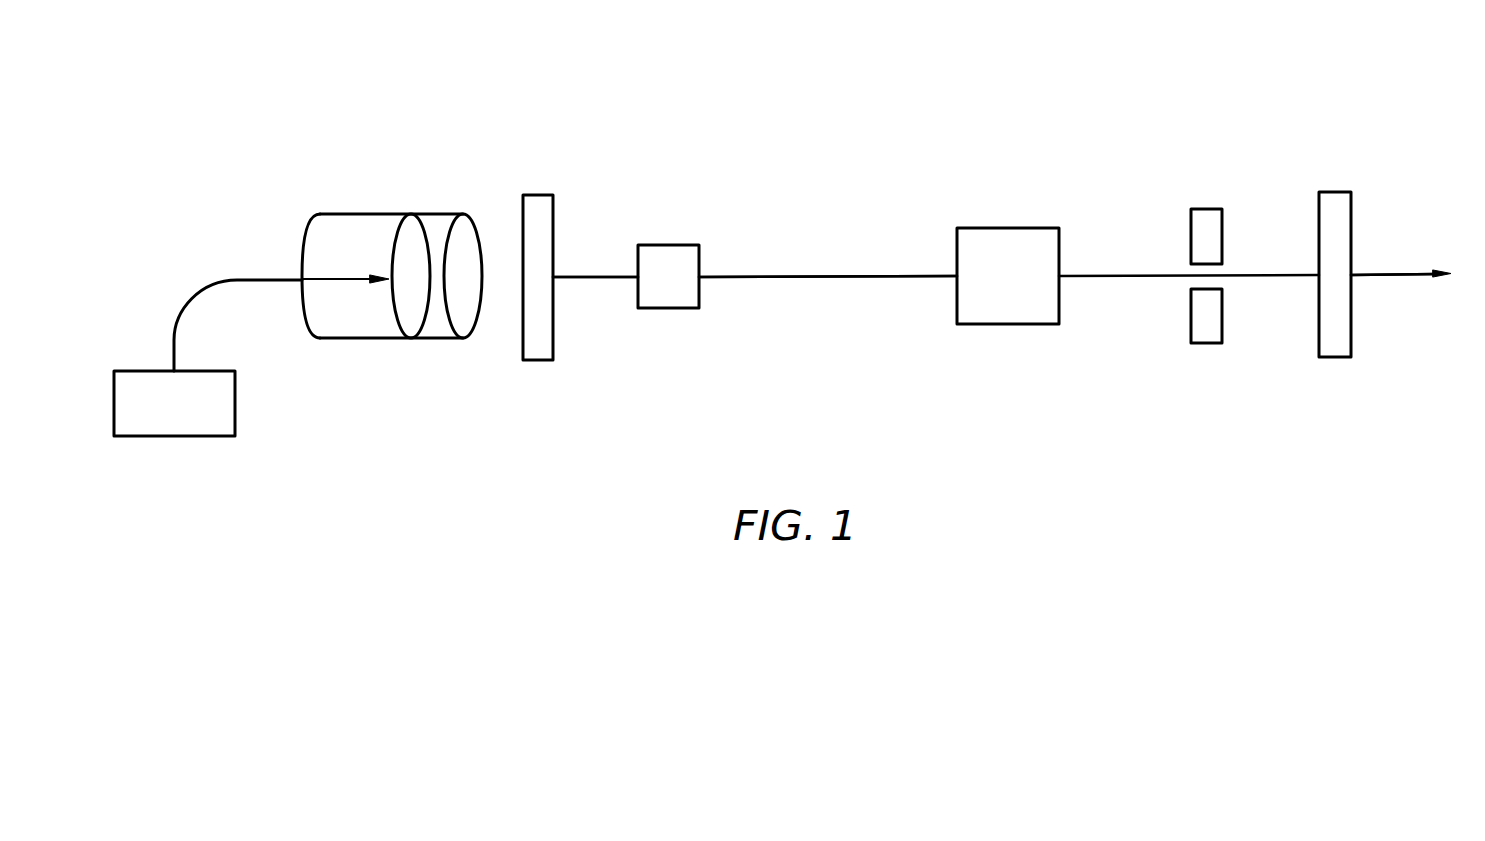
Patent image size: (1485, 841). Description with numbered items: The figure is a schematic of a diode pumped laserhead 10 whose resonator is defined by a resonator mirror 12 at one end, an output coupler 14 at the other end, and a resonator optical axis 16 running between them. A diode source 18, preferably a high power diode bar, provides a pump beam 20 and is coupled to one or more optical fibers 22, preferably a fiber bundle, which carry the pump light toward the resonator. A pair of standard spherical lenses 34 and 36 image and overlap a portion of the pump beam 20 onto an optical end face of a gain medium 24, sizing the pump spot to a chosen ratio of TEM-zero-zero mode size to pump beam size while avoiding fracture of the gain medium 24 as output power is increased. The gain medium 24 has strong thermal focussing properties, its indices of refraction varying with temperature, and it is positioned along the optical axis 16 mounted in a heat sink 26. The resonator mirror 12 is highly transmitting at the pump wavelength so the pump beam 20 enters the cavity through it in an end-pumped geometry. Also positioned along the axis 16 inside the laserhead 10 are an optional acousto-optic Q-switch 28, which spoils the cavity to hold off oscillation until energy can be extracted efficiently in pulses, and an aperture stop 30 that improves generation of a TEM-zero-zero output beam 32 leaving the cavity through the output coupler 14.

The diode pumped laserhead 10 is at (940, 75).
The resonator mirror 12 is at (540, 195).
The output coupler 14 is at (1338, 192).
The resonator optical axis 16 is at (818, 276).
The diode source 18 is at (179, 437).
The pump beam 20 is at (358, 281).
The optical fibers 22 is at (221, 282).
The gain medium 24 is at (673, 308).
The heat sink 26 is at (698, 155).
The Q-switch 28 is at (1029, 228).
The aperture stop 30 is at (1205, 344).
The output beam 32 is at (1395, 276).
The spherical lens 34 is at (412, 326).
The spherical lens 36 is at (473, 324).